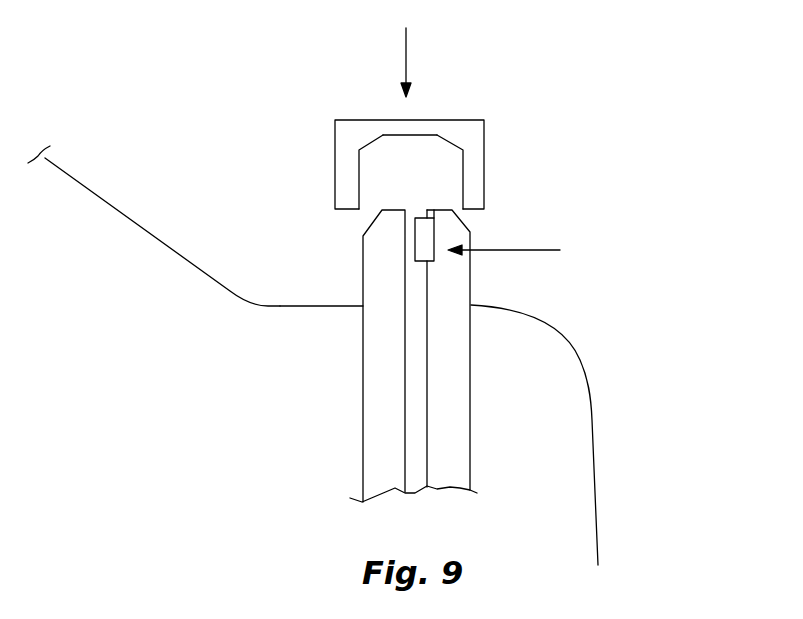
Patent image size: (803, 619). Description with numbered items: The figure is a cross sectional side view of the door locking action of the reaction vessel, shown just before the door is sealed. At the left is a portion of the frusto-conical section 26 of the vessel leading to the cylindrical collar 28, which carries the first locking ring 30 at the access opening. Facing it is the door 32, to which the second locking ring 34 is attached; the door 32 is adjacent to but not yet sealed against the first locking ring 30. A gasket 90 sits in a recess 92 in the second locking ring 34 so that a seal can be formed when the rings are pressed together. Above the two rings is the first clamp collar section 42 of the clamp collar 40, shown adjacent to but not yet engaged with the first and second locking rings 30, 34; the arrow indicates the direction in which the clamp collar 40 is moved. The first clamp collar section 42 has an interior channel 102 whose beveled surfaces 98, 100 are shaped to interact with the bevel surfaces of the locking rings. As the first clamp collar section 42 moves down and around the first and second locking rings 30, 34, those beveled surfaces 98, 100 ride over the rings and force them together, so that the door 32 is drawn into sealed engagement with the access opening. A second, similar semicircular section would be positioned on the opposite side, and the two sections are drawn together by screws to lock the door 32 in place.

The frusto-conical section 26 is at (107, 198).
The cylindrical collar 28 is at (292, 306).
The first locking ring 30 is at (377, 365).
The door 32 is at (557, 332).
The second locking ring 34 is at (460, 381).
The clamp collar 40 is at (407, 49).
The first clamp collar section 42 is at (467, 122).
The gasket 90 is at (427, 232).
The recess 92 is at (560, 250).
The beveled surface 98 is at (381, 149).
The beveled surface 100 is at (462, 150).
The interior channel 102 is at (395, 183).